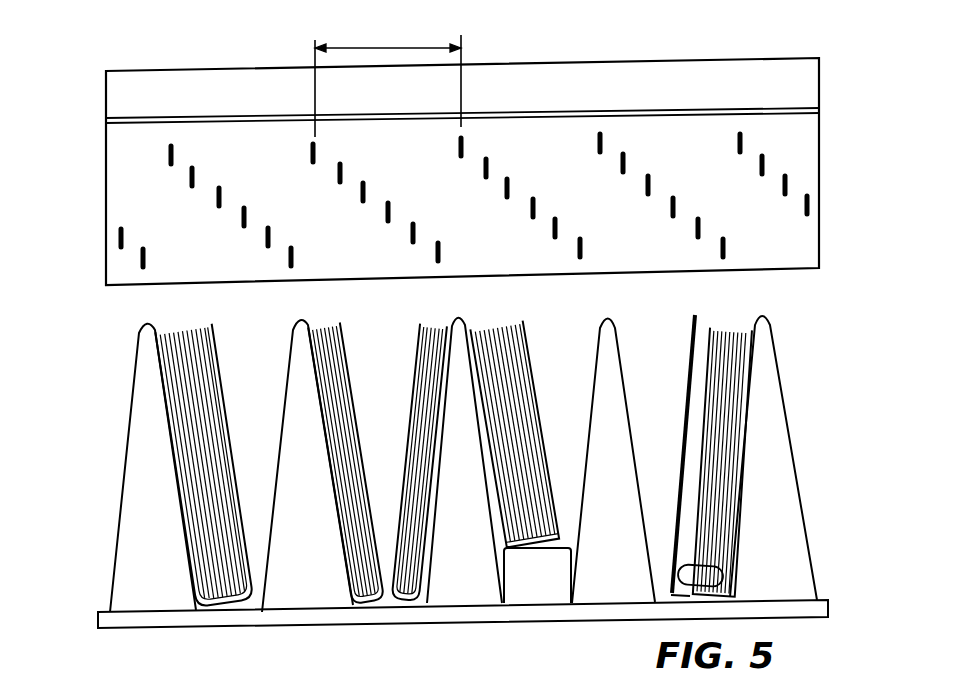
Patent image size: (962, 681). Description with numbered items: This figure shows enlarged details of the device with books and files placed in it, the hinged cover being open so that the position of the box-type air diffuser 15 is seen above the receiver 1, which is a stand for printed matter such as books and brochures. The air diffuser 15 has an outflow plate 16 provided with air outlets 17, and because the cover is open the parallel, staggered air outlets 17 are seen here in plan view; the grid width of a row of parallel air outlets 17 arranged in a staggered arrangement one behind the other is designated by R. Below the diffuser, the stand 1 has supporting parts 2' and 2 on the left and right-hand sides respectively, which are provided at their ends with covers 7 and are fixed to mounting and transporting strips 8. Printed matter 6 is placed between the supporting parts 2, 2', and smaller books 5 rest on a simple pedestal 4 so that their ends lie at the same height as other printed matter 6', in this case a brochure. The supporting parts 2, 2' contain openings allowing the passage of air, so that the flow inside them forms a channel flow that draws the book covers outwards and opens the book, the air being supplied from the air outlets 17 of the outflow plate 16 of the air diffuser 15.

The receiver 1 is at (115, 421).
The supporting part 2 is at (701, 459).
The supporting part 2' is at (338, 468).
The pedestal 4 is at (538, 580).
The smaller book 5 is at (528, 355).
The printed matter 6 is at (211, 465).
The printed matter 6' is at (354, 454).
The cover 7 is at (150, 500).
The mounting and transporting strip 8 is at (817, 602).
The air diffuser 15 is at (100, 157).
The outflow plate 16 is at (140, 200).
The air outlet 17 is at (140, 260).
The grid width R is at (388, 76).